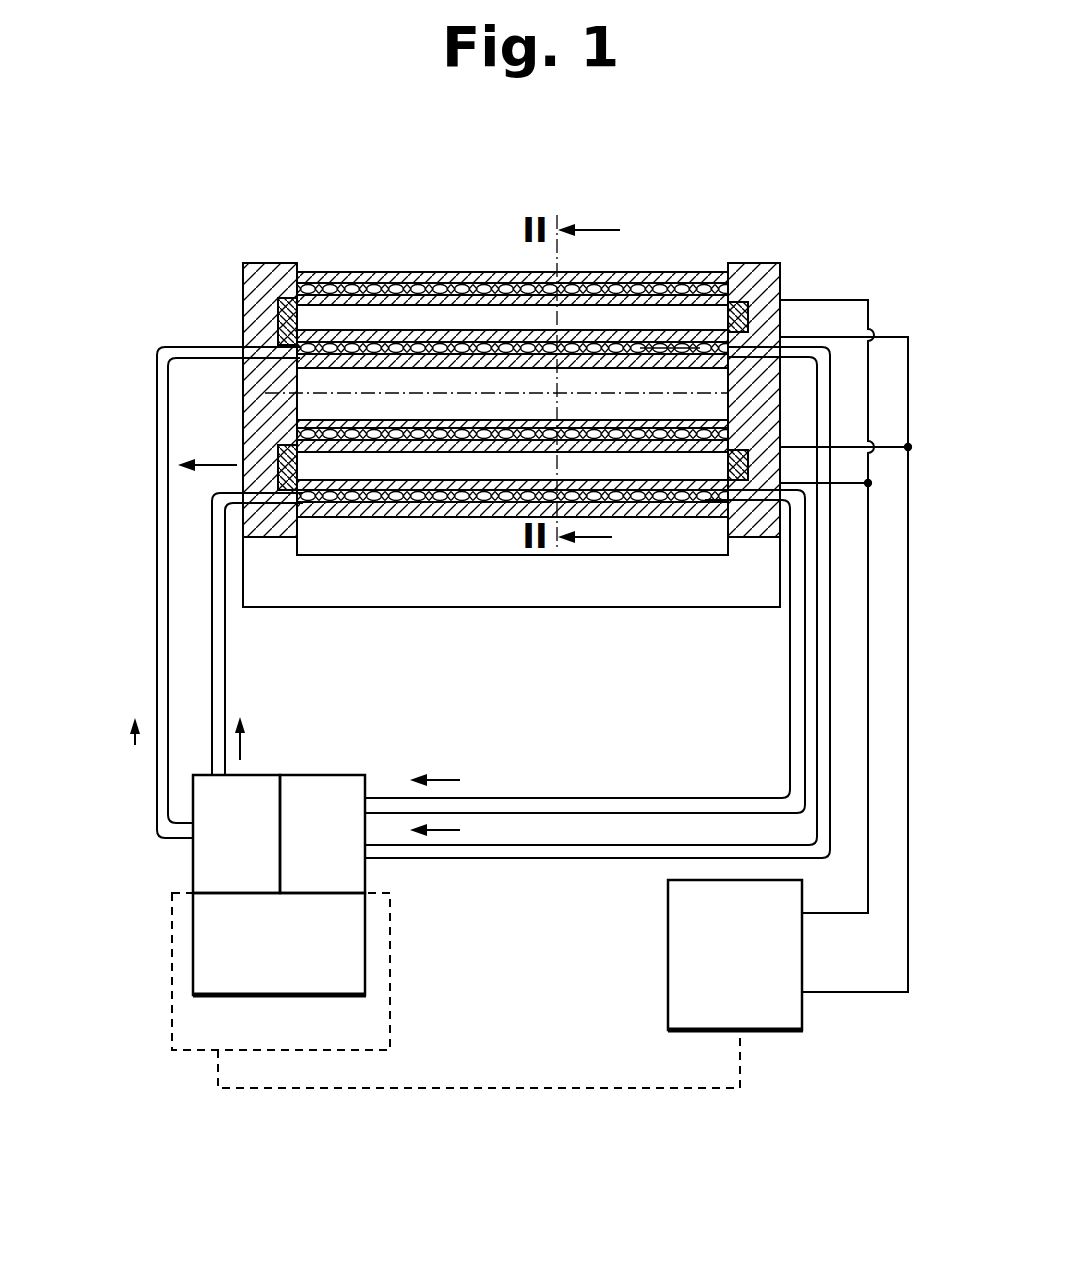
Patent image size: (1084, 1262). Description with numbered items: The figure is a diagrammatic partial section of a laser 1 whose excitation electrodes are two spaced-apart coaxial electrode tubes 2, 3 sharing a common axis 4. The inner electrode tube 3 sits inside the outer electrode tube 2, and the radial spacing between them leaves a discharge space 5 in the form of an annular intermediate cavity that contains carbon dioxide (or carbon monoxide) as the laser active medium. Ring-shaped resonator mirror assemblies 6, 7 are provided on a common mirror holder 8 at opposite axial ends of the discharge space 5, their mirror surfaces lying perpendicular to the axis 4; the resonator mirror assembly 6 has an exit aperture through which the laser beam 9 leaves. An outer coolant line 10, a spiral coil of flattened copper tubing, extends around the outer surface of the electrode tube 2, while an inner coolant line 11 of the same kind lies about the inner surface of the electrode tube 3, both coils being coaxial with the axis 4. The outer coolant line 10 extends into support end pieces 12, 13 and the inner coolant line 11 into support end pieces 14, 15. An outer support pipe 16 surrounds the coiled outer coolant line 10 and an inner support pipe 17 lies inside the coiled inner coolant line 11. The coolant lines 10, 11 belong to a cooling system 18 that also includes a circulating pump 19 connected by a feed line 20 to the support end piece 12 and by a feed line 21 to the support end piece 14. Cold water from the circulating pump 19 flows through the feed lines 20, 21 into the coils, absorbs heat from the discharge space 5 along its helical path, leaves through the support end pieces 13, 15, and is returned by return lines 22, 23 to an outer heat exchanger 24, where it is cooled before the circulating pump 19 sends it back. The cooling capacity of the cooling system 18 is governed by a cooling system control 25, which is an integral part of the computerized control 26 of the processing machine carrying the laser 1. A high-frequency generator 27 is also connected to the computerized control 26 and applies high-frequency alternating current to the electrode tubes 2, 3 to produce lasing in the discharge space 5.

The laser 1 is at (806, 254).
The outer electrode tube 2 is at (306, 272).
The inner electrode tube 3 is at (437, 455).
The common axis 4 is at (288, 388).
The discharge space 5 is at (373, 312).
The resonator mirror assembly 6 is at (275, 280).
The resonator mirror assembly 7 is at (755, 268).
The mirror holder 8 is at (568, 598).
The laser beam 9 is at (215, 470).
The outer coolant line 10 is at (400, 497).
The inner coolant line 11 is at (672, 340).
The support end piece 12 is at (270, 537).
The support end piece 13 is at (755, 520).
The support end piece 14 is at (280, 338).
The support end piece 15 is at (762, 315).
The outer support pipe 16 is at (460, 265).
The inner support pipe 17 is at (282, 433).
The cooling system 18 is at (305, 792).
The circulating pump 19 is at (224, 850).
The feed line 20 is at (232, 690).
The feed line 21 is at (158, 650).
The return line 22 is at (790, 710).
The return line 23 is at (822, 720).
The heat exchanger 24 is at (306, 850).
The cooling system control 25 is at (262, 955).
The computerized control 26 is at (415, 914).
The high-frequency generator 27 is at (714, 975).